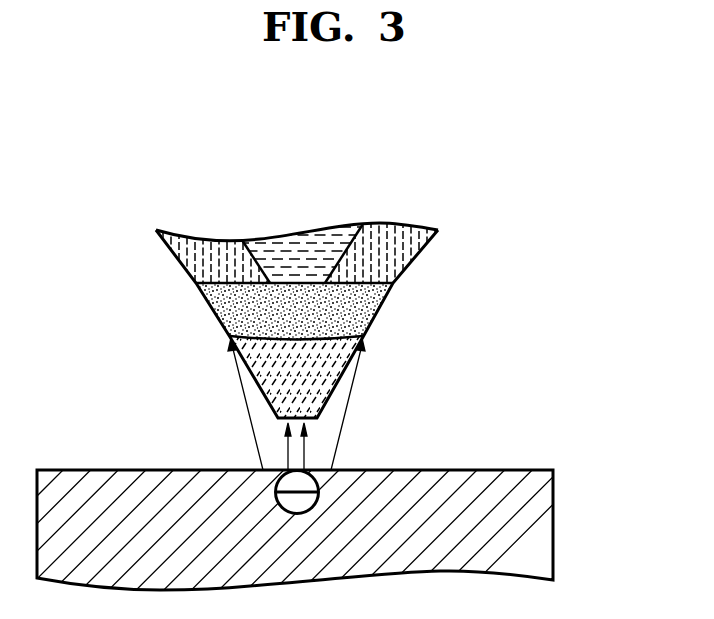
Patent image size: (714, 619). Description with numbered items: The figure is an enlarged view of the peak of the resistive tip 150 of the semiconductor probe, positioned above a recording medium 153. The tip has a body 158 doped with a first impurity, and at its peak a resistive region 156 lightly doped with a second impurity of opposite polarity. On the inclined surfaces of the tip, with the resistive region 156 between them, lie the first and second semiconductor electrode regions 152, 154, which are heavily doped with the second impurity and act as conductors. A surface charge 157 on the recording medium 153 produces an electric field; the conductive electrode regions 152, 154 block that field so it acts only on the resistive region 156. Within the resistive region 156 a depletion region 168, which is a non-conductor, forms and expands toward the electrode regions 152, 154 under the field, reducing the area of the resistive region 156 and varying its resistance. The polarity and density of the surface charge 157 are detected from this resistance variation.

The resistive tip 150 is at (414, 337).
The first semiconductor electrode region 152 is at (182, 236).
The recording medium 153 is at (543, 515).
The second semiconductor electrode region 154 is at (405, 226).
The resistive region 156 is at (224, 311).
The surface charge 157 is at (312, 471).
The body 158 is at (300, 238).
The depletion region 168 is at (263, 358).